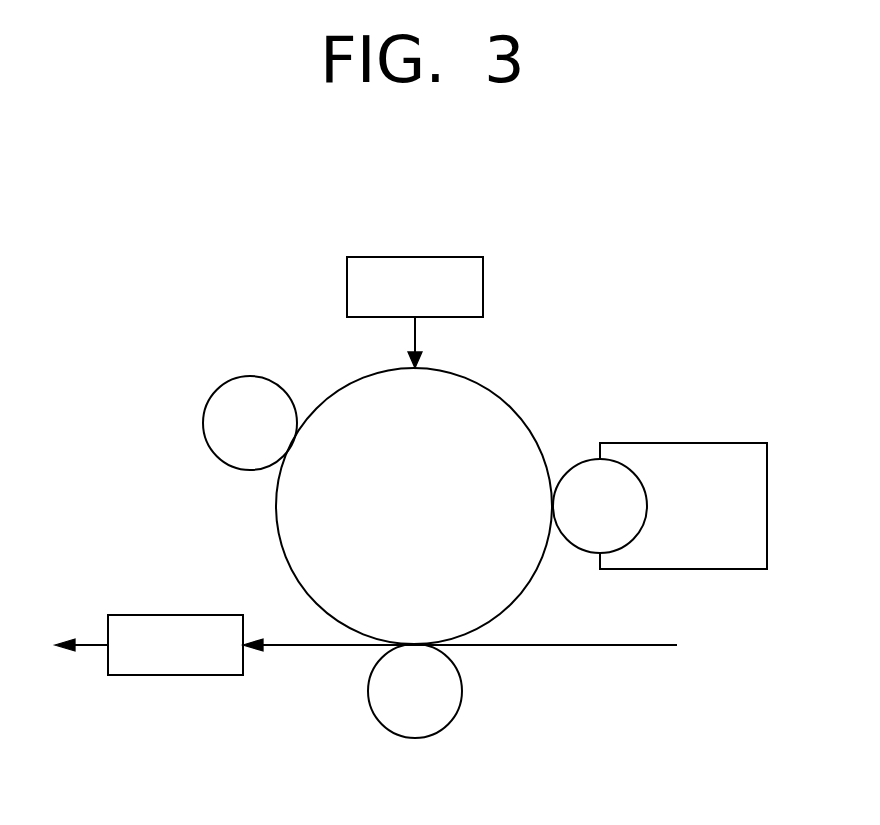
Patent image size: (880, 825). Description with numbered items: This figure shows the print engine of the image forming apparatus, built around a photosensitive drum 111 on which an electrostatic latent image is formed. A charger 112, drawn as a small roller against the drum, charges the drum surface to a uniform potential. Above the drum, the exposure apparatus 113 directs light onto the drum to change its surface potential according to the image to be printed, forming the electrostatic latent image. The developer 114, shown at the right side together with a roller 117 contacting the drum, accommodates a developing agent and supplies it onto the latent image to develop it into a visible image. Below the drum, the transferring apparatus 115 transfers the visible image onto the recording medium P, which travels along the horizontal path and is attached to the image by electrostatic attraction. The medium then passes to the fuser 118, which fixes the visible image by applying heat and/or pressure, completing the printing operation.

The photosensitive drum 111 is at (480, 383).
The charger 112 is at (250, 377).
The exposure apparatus 113 is at (415, 257).
The developer 114 is at (681, 443).
The transferring apparatus 115 is at (462, 690).
The developing roller 117 is at (567, 460).
The fuser 118 is at (175, 615).
The recording medium P is at (288, 648).